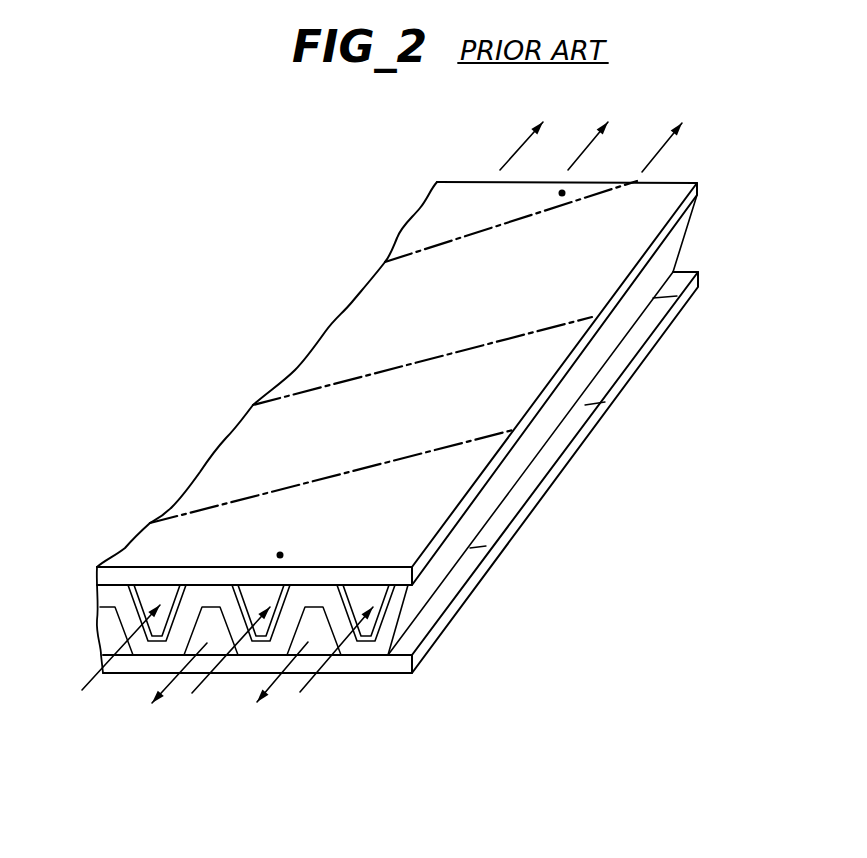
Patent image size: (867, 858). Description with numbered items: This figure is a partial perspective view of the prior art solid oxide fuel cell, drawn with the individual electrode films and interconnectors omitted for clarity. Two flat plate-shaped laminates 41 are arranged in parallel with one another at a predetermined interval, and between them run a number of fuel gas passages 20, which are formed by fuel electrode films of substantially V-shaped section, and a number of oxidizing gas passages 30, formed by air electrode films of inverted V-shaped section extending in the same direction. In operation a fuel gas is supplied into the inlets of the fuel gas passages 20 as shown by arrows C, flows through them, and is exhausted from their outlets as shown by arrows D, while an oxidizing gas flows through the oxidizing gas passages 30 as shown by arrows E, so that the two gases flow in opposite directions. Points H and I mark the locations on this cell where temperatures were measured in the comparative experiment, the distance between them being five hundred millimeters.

The flat plate-shaped laminate 41 is at (699, 184).
The fuel gas passage 20 is at (135, 598).
The oxidizing gas passage 30 is at (206, 602).
The temperature measuring point H is at (281, 553).
The temperature measuring point I is at (563, 196).
The arrows indicating fuel gas exhaust D is at (590, 142).
The arrows indicating oxidizing gas flow E is at (164, 690).
The arrows indicating fuel gas supply C is at (85, 684).